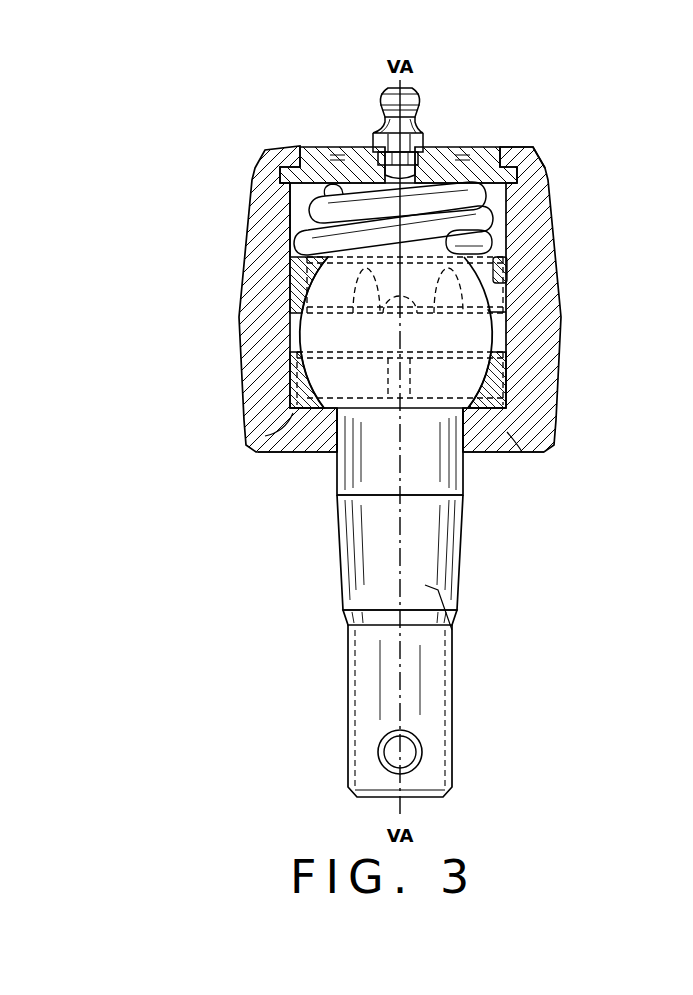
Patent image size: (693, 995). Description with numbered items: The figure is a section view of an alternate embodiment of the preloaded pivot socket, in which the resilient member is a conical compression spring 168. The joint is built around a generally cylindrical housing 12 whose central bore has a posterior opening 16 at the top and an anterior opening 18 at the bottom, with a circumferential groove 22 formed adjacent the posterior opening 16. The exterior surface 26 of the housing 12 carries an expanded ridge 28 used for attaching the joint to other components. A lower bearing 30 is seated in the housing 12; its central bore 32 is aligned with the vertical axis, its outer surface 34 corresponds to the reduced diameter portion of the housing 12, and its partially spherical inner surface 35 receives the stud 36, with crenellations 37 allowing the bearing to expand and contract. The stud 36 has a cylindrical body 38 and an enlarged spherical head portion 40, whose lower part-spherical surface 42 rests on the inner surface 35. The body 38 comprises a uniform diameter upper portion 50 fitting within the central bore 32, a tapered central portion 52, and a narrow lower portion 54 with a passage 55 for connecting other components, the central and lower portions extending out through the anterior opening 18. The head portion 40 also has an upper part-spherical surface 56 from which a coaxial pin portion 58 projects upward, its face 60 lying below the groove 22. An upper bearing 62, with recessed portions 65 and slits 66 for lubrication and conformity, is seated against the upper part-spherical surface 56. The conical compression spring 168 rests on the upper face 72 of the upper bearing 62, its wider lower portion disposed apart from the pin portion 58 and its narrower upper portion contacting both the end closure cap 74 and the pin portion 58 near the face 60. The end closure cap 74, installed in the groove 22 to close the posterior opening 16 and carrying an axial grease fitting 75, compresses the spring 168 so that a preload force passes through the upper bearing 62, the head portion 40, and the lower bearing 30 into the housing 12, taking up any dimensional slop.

The housing 12 is at (378, 324).
The posterior opening 16 is at (470, 160).
The anterior opening 18 is at (333, 444).
The circumferential groove 22 is at (383, 133).
The exterior surface 26 is at (236, 285).
The expanded ridge 28 is at (398, 295).
The lower bearing 30 is at (510, 420).
The central bore 32 is at (313, 453).
The outer surface 34 is at (516, 382).
The inner surface 35 is at (260, 438).
The stud 36 is at (461, 602).
The crenellations 37 is at (393, 380).
The cylindrical body 38 is at (455, 626).
The head portion 40 is at (467, 328).
The lower part-spherical surface 42 is at (510, 452).
The upper portion 50 is at (465, 473).
The tapered central portion 52 is at (461, 540).
The lower portion 54 is at (458, 750).
The passage 55 is at (408, 758).
The upper part-spherical surface 56 is at (498, 296).
The pin portion 58 is at (457, 213).
The face 60 is at (358, 185).
The upper bearing 62 is at (303, 277).
The recessed portions 65 is at (349, 320).
The slits 66 is at (492, 247).
The upper face 72 is at (283, 253).
The end closure cap 74 is at (500, 170).
The grease fitting 75 is at (420, 90).
The conical compression spring 168 is at (496, 201).